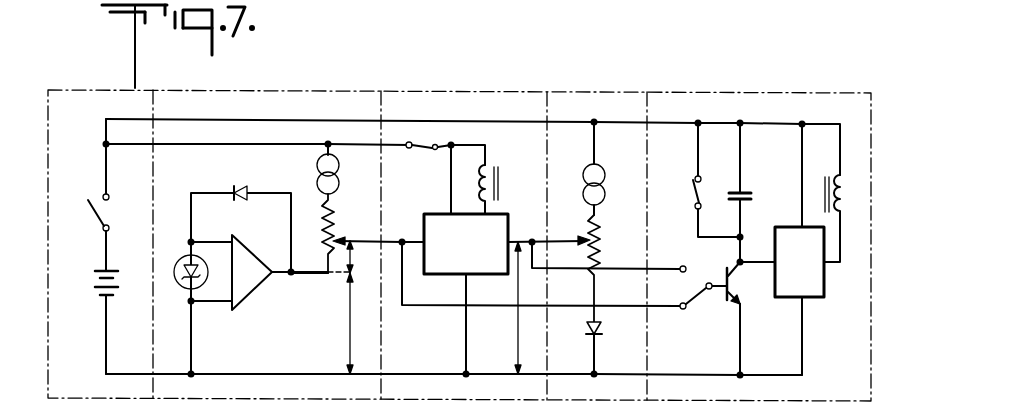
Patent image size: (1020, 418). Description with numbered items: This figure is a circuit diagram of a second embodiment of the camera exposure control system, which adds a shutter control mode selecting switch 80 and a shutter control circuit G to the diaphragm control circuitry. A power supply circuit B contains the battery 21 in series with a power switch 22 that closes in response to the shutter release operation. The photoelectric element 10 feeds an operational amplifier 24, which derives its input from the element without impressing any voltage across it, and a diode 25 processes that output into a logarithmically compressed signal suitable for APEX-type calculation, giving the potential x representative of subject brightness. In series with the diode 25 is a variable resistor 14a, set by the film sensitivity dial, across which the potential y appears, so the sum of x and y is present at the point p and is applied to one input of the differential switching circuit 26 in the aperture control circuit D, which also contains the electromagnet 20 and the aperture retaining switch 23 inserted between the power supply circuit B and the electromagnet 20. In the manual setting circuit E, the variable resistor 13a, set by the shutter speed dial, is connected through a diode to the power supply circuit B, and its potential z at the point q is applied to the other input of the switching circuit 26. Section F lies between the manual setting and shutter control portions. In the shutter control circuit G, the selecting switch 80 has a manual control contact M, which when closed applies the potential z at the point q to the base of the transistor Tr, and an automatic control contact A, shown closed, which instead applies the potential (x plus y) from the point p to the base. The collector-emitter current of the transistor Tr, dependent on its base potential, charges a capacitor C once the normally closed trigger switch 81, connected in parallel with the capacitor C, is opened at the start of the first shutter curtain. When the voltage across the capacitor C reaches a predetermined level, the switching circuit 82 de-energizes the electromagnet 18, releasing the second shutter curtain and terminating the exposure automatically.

The photoelectric element 10 is at (178, 283).
The variable resistor 13a is at (602, 225).
The variable resistor 14a is at (337, 233).
The electromagnet 18 is at (848, 192).
The electromagnet 20 is at (506, 178).
The battery 21 is at (92, 283).
The power switch 22 is at (90, 220).
The aperture retaining switch 23 is at (416, 160).
The operational amplifier 24 is at (256, 285).
The diode 25 is at (244, 186).
The differential switching circuit 26 is at (473, 261).
The shutter control mode selecting switch 80 is at (700, 300).
The trigger switch 81 is at (694, 190).
The switching circuit 82 is at (806, 276).
The power supply circuit B is at (86, 88).
The aperture control circuit D is at (279, 88).
The manual setting circuit E is at (466, 98).
The section F is at (593, 100).
The shutter control circuit G is at (740, 97).
The capacitor C is at (747, 192).
The manual control contact M is at (684, 265).
The automatic control contact A is at (682, 310).
The transistor Tr is at (744, 289).
The point p is at (338, 238).
The point q is at (589, 233).
The potential x is at (350, 318).
The potential y is at (352, 258).
The potential z is at (518, 318).